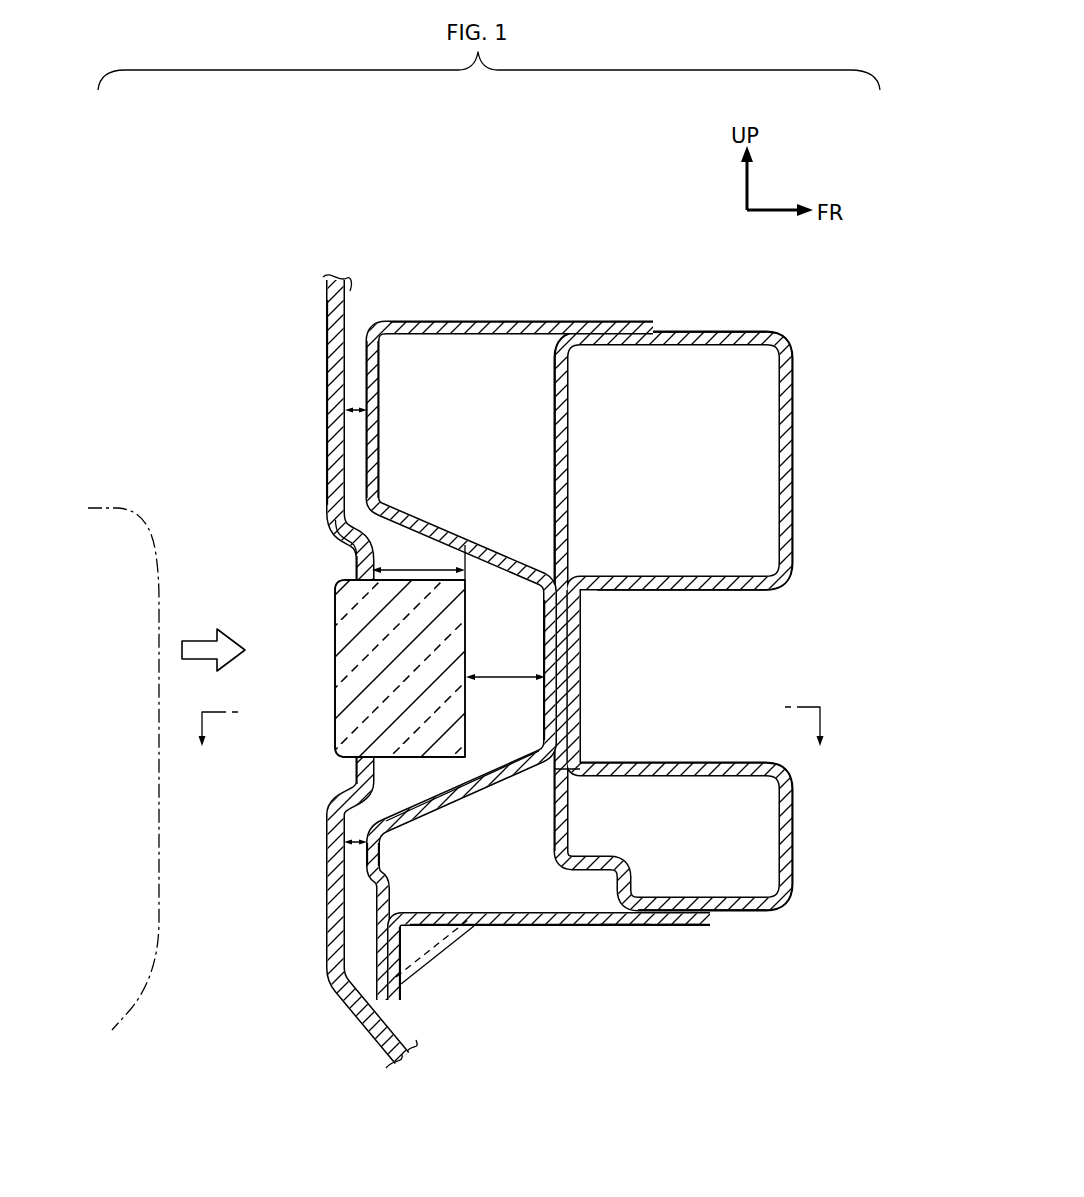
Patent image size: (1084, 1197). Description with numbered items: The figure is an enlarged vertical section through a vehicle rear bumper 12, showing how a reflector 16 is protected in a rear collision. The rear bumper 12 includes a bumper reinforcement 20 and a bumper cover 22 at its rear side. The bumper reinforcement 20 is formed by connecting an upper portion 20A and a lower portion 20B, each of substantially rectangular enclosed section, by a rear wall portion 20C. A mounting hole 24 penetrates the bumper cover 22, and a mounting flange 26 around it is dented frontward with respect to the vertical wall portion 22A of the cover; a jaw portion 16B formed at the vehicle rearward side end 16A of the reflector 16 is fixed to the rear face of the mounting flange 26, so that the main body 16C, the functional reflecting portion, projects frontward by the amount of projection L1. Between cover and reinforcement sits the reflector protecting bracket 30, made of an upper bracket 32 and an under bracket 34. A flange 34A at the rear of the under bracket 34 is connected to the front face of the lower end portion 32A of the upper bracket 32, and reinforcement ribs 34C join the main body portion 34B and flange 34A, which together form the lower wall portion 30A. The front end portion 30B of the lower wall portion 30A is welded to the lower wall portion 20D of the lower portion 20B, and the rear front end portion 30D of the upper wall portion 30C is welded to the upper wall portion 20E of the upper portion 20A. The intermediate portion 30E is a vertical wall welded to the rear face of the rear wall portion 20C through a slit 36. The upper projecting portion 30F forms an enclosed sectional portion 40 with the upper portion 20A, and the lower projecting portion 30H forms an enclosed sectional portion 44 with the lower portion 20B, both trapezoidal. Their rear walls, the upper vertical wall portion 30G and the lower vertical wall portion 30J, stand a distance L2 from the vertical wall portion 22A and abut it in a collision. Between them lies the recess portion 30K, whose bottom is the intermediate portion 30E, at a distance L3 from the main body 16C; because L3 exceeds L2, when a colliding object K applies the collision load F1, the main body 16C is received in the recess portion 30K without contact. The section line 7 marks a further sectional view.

The rear bumper 12 is at (515, 204).
The bumper cover 22 is at (350, 325).
The vertical wall portion 22A is at (327, 478).
The bumper reinforcement 20 is at (681, 323).
The upper portion 20A is at (796, 437).
The lower portion 20B is at (796, 832).
The rear wall portion 20C is at (581, 678).
The lower wall portion 20D is at (723, 914).
The upper wall portion 20E is at (718, 331).
The reflector 16 is at (330, 688).
The vehicle rearward side end 16A is at (337, 664).
The jaw portion 16B is at (340, 578).
The main body 16C is at (420, 767).
The mounting hole 24 is at (343, 590).
The mounting flange 26 is at (343, 572).
The reflector protecting bracket 30 is at (490, 656).
The upper bracket 32 is at (470, 805).
The lower end portion 32A is at (378, 928).
The under bracket 34 is at (575, 943).
The flange 34A is at (403, 950).
The main body portion 34B is at (541, 927).
The reinforcement ribs 34C is at (452, 934).
The lower wall portion 30A is at (617, 927).
The front end portion 30B is at (677, 927).
The upper wall portion 30C is at (491, 320).
The rear front end portion 30D is at (605, 320).
The intermediate portion 30E is at (545, 698).
The projecting portion 30F is at (357, 380).
The upper vertical wall portion 30G is at (380, 432).
The projecting portion 30H is at (366, 853).
The lower vertical wall portion 30J is at (372, 872).
The recess portion 30K is at (495, 761).
The slit 36 is at (545, 632).
The enclosed sectional portion 40 is at (496, 441).
The enclosed sectional portion 44 is at (502, 870).
The colliding object K is at (153, 522).
The collision load F1 is at (205, 659).
The section line 7 is at (511, 740).
The amount of projection L1 is at (400, 567).
The distance L2 is at (368, 415).
The distance L3 is at (504, 674).